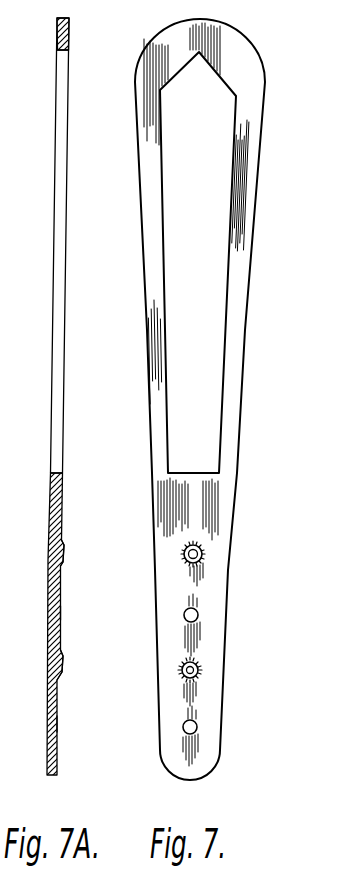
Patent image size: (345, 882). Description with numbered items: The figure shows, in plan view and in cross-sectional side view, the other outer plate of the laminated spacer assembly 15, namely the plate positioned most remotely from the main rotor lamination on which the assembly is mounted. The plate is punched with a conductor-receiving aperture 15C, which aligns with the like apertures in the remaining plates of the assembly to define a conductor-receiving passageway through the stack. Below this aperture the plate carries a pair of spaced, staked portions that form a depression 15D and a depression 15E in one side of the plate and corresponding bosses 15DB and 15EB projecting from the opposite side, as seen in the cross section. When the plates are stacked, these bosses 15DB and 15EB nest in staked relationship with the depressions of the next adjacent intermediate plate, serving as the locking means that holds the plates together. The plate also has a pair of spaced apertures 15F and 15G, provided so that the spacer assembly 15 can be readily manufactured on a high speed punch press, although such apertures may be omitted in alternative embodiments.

In FIG. 7A, the spacer assembly 15 is at (61, 497).
In FIG. 7, the spacer assembly 15 is at (223, 497).
In FIG. 7A, the conductor-receiving aperture 15C is at (63, 363).
In FIG. 7, the conductor-receiving aperture 15C is at (220, 272).
In FIG. 7, the depression 15D is at (202, 554).
In FIG. 7A, the boss 15DB is at (63, 541).
In FIG. 7, the depression 15E is at (198, 672).
In FIG. 7A, the boss 15EB is at (62, 664).
In FIG. 7A, the aperture 15F is at (61, 613).
In FIG. 7, the aperture 15F is at (198, 613).
In FIG. 7A, the aperture 15G is at (57, 723).
In FIG. 7, the aperture 15G is at (197, 725).